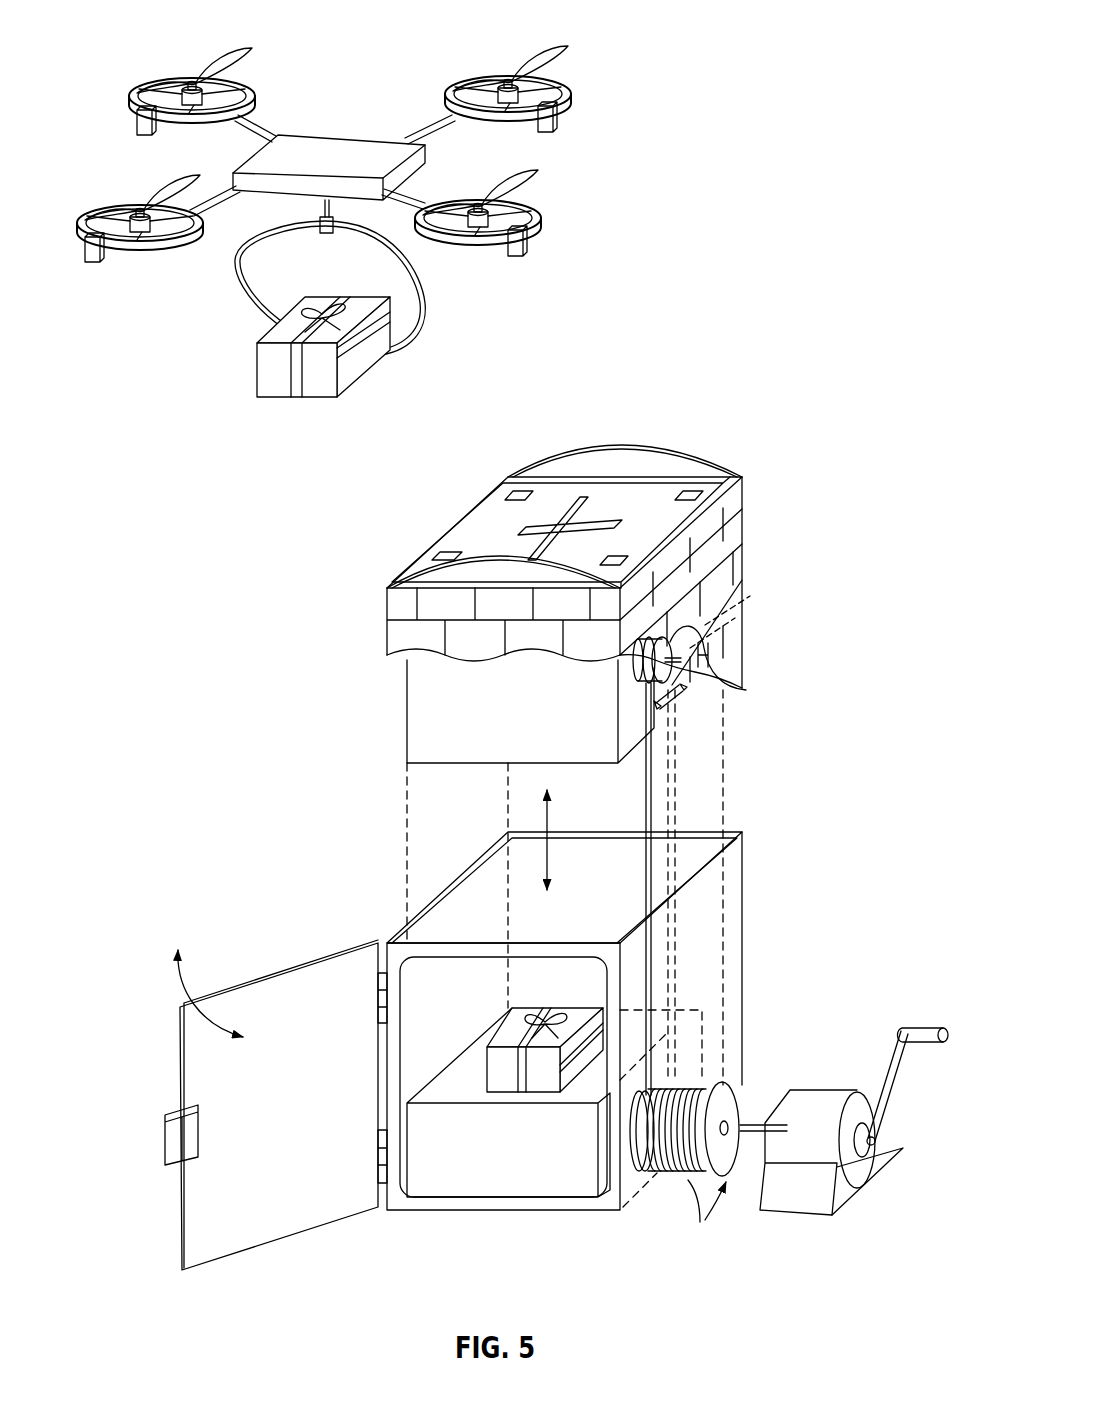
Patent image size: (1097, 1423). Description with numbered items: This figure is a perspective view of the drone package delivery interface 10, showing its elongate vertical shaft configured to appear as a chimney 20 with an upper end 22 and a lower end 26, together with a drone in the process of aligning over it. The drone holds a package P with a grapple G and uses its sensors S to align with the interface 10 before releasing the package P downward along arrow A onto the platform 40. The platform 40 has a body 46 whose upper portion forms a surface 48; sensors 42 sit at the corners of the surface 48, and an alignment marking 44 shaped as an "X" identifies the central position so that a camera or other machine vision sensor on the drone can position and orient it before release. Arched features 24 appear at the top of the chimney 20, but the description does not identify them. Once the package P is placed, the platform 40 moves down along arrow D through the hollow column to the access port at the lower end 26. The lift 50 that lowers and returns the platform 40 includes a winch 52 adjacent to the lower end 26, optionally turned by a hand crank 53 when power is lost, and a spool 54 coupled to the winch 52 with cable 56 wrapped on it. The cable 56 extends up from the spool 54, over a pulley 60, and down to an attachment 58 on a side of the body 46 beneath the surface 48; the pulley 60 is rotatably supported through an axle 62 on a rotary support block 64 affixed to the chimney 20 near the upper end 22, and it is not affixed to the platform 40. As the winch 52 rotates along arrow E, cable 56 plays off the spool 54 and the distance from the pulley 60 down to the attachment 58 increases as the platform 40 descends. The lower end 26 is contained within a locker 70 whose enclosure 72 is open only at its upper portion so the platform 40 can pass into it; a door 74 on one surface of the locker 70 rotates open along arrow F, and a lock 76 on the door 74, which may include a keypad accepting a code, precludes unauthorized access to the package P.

The interface 10 is at (240, 647).
The chimney 20 is at (613, 785).
The upper end 22 is at (742, 479).
The arched guide rails 24 is at (624, 447).
The lower end 26 is at (430, 1212).
The platform 40 is at (482, 542).
The sensors 42 is at (520, 492).
The alignment markings 44 is at (542, 525).
The body 46 is at (465, 721).
The surface 48 is at (497, 520).
The lift 50 is at (796, 1120).
The winch 52 is at (800, 1208).
The hand crank 53 is at (896, 1075).
The spool 54 is at (742, 1100).
The cable 56 is at (645, 885).
The attachment 58 is at (676, 700).
The pulley 60 is at (636, 670).
The axle 62 is at (706, 677).
The rotary support block 64 is at (748, 619).
The locker 70 is at (431, 980).
The enclosure 72 is at (484, 872).
The door 74 is at (300, 1124).
The lock 76 is at (175, 1120).
The arrow A is at (470, 342).
The sensors S is at (138, 135).
The grapple G is at (238, 272).
The package P is at (262, 380).
The arrow D is at (549, 812).
The arrow E is at (702, 1222).
The arrow F is at (180, 980).